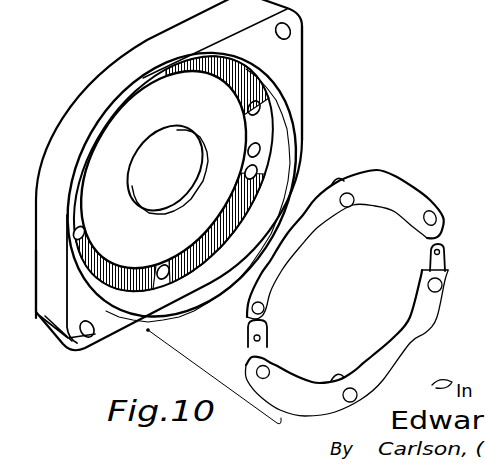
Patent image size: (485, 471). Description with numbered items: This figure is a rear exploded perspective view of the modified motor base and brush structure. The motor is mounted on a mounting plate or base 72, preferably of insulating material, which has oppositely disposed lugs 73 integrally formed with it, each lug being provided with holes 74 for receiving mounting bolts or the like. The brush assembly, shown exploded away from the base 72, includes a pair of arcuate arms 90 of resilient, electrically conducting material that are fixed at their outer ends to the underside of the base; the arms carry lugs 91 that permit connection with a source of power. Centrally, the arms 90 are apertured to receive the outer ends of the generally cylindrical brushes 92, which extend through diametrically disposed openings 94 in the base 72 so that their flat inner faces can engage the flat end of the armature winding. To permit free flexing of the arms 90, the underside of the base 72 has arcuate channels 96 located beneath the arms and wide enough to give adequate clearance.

The mounting plate or base 72 is at (147, 33).
The lugs 73 is at (298, 51).
The holes 74 is at (292, 29).
The arcuate arms 90 is at (420, 192).
The lugs 91 is at (445, 257).
The brushes 92 is at (338, 181).
The openings 94 is at (167, 272).
The arcuate channels 96 is at (226, 60).